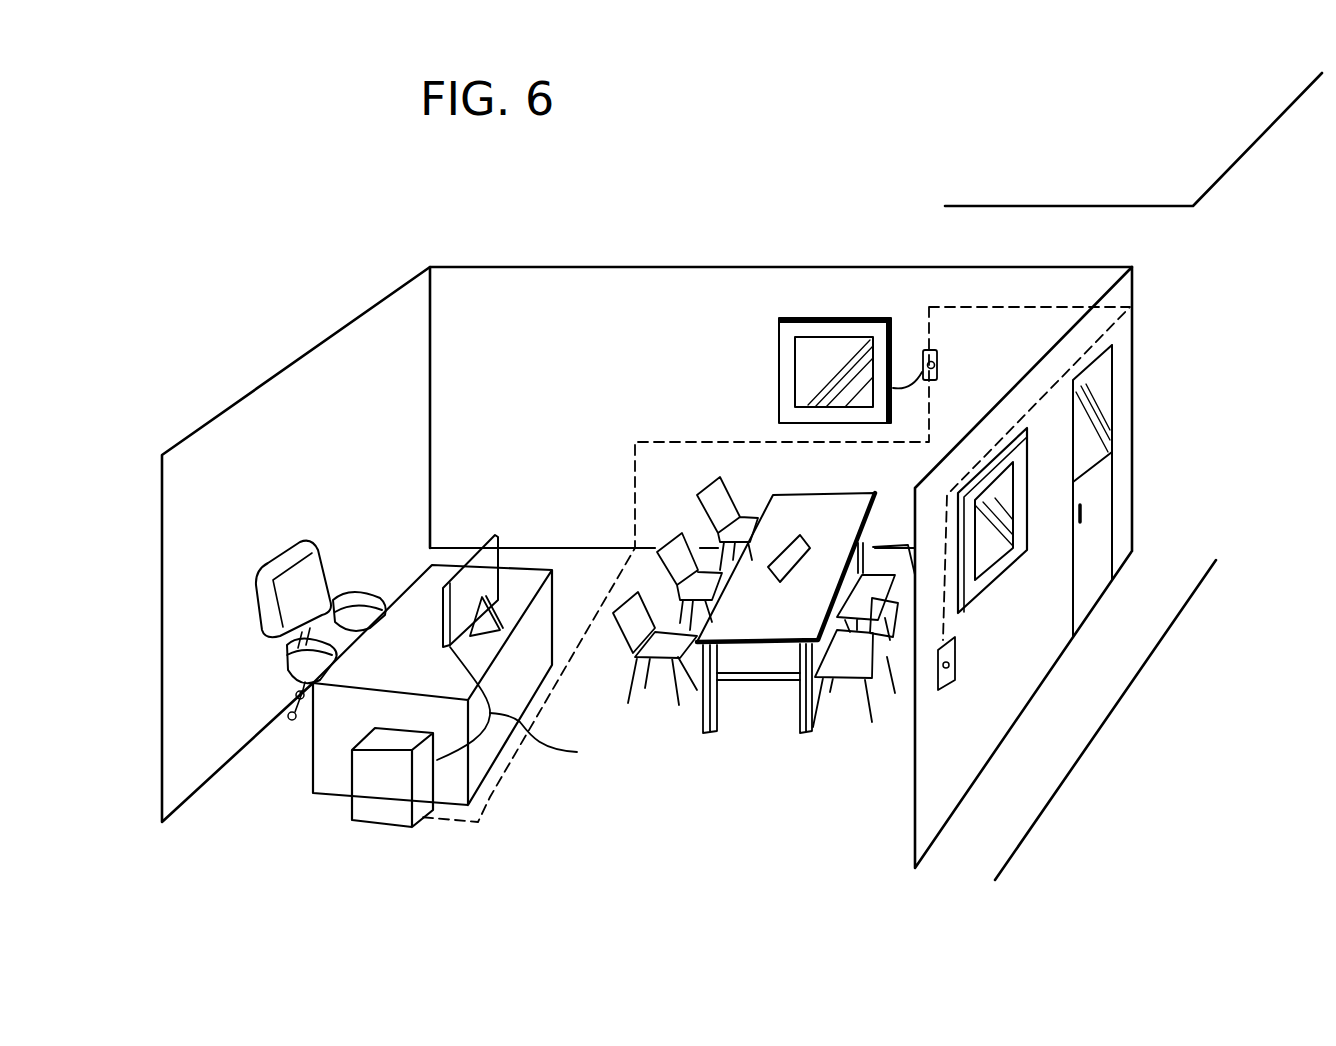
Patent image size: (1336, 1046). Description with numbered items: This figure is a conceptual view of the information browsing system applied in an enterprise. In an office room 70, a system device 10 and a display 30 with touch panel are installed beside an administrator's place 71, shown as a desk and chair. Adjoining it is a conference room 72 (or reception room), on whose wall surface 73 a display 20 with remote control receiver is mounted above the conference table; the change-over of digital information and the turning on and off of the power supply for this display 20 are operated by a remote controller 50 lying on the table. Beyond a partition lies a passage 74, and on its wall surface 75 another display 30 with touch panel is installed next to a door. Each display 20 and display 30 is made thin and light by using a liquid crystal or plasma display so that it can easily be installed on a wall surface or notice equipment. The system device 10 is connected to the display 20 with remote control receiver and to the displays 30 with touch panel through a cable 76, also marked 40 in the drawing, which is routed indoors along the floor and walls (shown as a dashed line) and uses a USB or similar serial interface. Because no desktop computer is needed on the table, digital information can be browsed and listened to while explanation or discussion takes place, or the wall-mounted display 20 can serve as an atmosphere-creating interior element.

The system device 10 is at (385, 818).
The display with remote control receiver 20 is at (805, 340).
The display with touch panel 30 is at (465, 572).
The communication cable / sensor 40 is at (922, 372).
The remote controller 50 is at (793, 540).
The office room 70 is at (228, 818).
The administrator's place 71 is at (308, 546).
The conference room 72 is at (765, 615).
The wall surface 73 is at (720, 275).
The passage 74 is at (1007, 798).
The wall surface 75 is at (933, 785).
The cable 76 is at (497, 795).